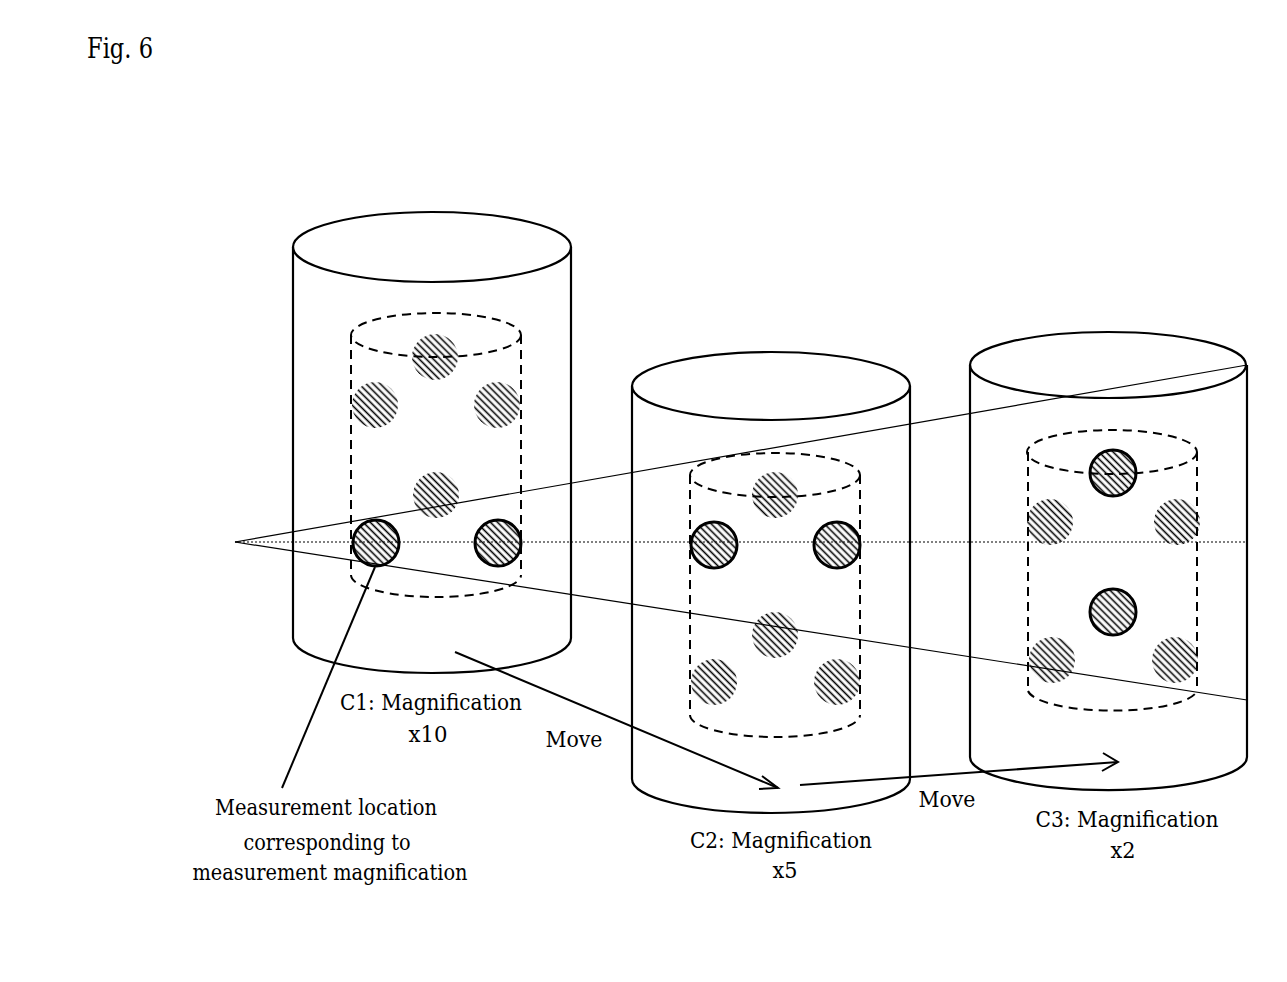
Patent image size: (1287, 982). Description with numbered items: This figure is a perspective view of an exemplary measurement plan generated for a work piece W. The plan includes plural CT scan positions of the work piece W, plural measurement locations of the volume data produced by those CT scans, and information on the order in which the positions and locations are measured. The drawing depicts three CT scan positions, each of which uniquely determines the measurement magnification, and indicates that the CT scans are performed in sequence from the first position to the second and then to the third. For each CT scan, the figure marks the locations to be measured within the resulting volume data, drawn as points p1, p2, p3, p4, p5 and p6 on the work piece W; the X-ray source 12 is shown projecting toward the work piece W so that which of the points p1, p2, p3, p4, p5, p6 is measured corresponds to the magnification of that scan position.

The X-ray source 12 is at (690, 532).
The work piece W is at (572, 293).
The measurement location p1 is at (699, 475).
The measurement location p2 is at (852, 475).
The measurement location p3 is at (787, 421).
The measurement location p4 is at (699, 602).
The measurement location p5 is at (852, 609).
The measurement location p6 is at (774, 553).